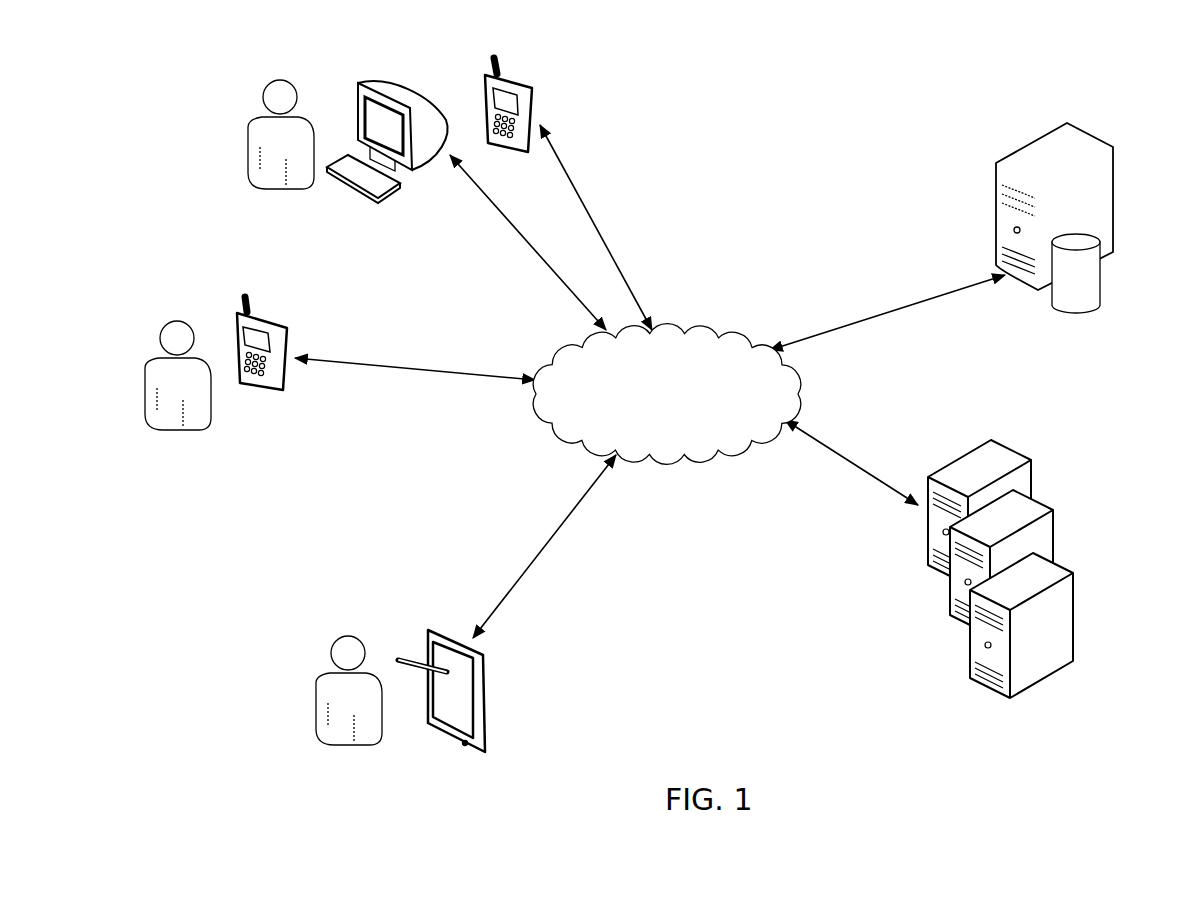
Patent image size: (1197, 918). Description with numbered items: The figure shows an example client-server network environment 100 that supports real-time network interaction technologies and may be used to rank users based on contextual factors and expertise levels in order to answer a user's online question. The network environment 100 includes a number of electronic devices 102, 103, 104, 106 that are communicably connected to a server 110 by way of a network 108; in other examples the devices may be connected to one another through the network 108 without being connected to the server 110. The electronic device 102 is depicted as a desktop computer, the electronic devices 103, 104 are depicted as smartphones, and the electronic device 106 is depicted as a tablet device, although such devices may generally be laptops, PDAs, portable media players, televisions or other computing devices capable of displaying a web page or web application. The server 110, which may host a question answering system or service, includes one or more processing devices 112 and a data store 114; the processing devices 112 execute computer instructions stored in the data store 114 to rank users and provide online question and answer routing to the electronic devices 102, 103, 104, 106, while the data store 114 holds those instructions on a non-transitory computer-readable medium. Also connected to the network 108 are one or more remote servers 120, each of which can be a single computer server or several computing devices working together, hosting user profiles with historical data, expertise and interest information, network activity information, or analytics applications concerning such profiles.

The network environment 100 is at (742, 118).
The electronic device 102 is at (386, 82).
The electronic device 103 is at (517, 85).
The electronic device 104 is at (268, 318).
The electronic device 106 is at (437, 627).
The network 108 is at (667, 328).
The server 110 is at (1058, 221).
The processing devices 112 is at (1087, 130).
The data store 114 is at (1100, 289).
The remote servers 120 is at (912, 592).